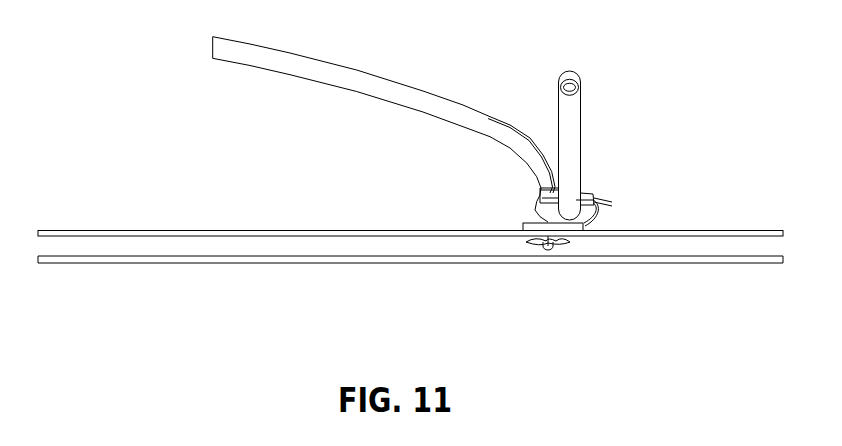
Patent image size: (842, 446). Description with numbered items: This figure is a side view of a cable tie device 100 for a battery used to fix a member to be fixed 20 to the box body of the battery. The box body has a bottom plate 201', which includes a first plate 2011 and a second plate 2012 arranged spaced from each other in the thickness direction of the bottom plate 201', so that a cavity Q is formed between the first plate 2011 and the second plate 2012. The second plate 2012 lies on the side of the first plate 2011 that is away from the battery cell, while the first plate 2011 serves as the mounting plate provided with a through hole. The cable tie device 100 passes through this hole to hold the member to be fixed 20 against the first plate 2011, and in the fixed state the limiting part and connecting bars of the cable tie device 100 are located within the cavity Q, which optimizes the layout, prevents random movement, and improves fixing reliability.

The member to be fixed 20 is at (573, 151).
The cable tie device 100 is at (627, 215).
The bottom plate 201' is at (410, 306).
The first plate 2011 is at (197, 236).
The second plate 2012 is at (248, 263).
The cavity Q is at (311, 248).